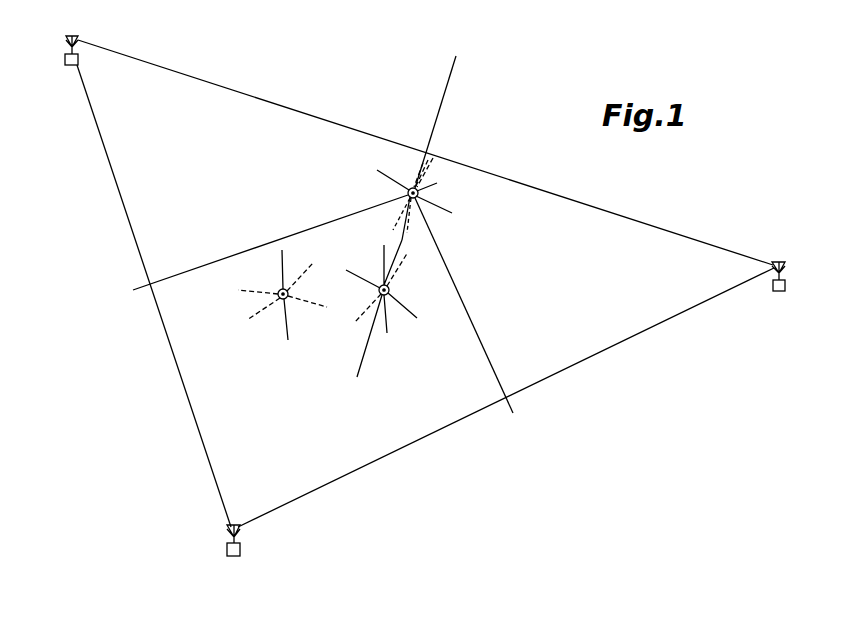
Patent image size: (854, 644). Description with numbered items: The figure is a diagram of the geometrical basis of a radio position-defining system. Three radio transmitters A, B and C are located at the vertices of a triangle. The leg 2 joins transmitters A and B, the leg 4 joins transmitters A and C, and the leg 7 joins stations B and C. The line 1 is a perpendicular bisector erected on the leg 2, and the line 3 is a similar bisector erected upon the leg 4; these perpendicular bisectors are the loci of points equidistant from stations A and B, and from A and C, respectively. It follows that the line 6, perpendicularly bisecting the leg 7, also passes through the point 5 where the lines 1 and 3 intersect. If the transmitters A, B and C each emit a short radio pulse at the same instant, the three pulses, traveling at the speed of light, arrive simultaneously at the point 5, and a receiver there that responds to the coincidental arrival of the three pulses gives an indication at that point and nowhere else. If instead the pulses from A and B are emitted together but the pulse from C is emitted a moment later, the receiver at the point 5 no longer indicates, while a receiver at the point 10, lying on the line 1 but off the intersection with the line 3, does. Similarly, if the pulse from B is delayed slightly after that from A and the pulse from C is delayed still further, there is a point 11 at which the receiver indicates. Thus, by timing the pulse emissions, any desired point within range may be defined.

The perpendicular bisector 1 is at (452, 81).
The leg of triangle 2 is at (511, 178).
The perpendicular bisector 3 is at (480, 343).
The leg of triangle 4 is at (610, 345).
The point of intersection 5 is at (419, 193).
The perpendicular bisector 6 is at (244, 252).
The leg of triangle 7 is at (143, 265).
The point 10 is at (390, 291).
The point 11 is at (290, 293).
The radio transmitter A is at (777, 291).
The radio transmitter B is at (68, 65).
The radio transmitter C is at (227, 549).